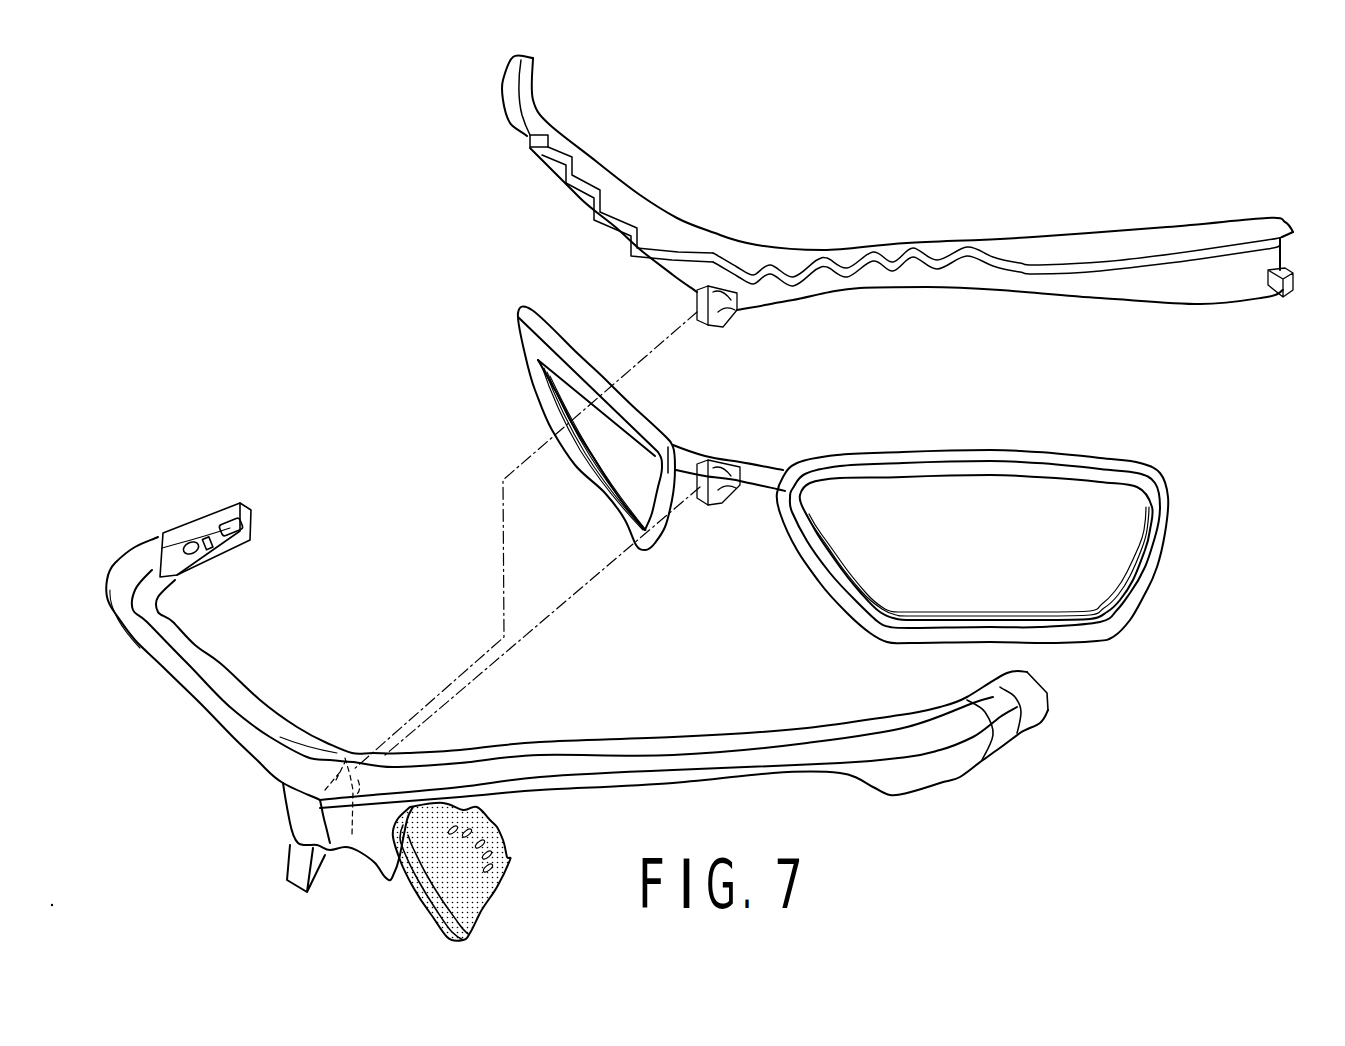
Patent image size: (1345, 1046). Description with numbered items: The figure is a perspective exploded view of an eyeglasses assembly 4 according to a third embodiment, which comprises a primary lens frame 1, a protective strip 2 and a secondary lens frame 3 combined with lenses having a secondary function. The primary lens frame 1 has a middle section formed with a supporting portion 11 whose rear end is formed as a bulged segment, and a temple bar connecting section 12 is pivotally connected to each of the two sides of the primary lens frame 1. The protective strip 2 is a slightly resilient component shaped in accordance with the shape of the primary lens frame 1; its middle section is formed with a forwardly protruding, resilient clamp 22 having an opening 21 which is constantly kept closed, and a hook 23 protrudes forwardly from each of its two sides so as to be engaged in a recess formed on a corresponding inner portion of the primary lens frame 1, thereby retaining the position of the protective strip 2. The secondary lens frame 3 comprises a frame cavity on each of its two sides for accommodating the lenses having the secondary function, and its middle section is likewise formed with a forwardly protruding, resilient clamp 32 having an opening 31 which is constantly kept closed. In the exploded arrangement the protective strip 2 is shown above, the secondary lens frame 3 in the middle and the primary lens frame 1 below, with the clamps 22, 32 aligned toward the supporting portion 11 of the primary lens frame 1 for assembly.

The primary lens frame 1 is at (615, 693).
The supporting portion 11 is at (345, 753).
The temple bar connecting section 12 is at (177, 533).
The protective strip 2 is at (917, 220).
The opening 21 is at (697, 300).
The resilient clamp 22 is at (725, 318).
The hook 23 is at (1295, 298).
The secondary lens frame 3 is at (942, 512).
The opening 31 is at (717, 464).
The resilient clamp 32 is at (720, 504).
The eyeglasses assembly 4 is at (383, 453).